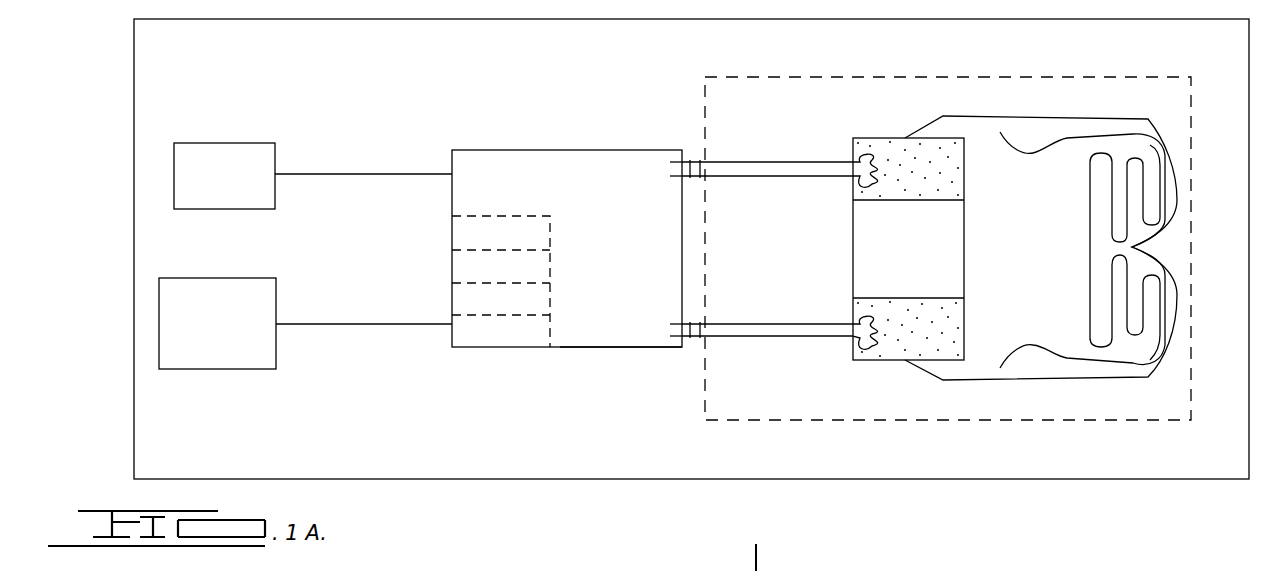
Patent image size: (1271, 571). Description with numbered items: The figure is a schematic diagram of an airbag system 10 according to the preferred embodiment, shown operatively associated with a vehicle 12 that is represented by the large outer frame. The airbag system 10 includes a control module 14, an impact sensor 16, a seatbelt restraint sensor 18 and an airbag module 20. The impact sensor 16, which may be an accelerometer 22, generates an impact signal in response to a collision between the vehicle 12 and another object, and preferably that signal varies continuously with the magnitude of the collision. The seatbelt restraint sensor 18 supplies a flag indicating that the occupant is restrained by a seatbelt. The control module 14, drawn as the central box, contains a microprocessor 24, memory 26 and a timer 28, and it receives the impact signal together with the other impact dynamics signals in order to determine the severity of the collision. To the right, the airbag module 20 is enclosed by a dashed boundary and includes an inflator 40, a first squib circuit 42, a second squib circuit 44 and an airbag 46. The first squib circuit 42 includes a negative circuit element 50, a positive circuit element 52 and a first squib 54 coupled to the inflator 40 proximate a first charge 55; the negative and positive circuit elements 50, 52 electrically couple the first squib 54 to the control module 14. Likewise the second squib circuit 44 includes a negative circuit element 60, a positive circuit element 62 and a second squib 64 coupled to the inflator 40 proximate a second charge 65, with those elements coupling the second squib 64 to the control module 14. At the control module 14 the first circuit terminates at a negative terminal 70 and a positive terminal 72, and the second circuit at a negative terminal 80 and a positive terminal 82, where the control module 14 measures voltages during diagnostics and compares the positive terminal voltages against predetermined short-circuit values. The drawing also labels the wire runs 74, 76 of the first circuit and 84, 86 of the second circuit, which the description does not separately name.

The airbag system 10 is at (518, 83).
The vehicle 12 is at (134, 72).
The control module 14 is at (540, 162).
The impact sensor 16 is at (207, 145).
The seatbelt restraint sensor 18 is at (250, 360).
The airbag module 20 is at (1032, 422).
The accelerometer 22 is at (268, 155).
The microprocessor 24 is at (455, 195).
The memory 26 is at (555, 322).
The timer 28 is at (629, 333).
The inflator 40 is at (948, 252).
The first squib circuit 42 is at (767, 165).
The second squib circuit 44 is at (767, 328).
The airbag 46 is at (1165, 293).
The negative circuit element 50 is at (697, 180).
The positive circuit element 52 is at (697, 185).
The first squib 54 is at (878, 155).
The first charge 55 is at (958, 173).
The negative circuit element 60 is at (697, 323).
The positive circuit element 62 is at (697, 338).
The second squib 64 is at (878, 318).
The second charge 65 is at (958, 335).
The negative terminal 70 is at (680, 162).
The positive terminal 72 is at (680, 176).
The first initiator return wire 74 is at (793, 180).
The first initiator supply wire 76 is at (752, 160).
The negative terminal 80 is at (680, 320).
The positive terminal 82 is at (680, 333).
The second initiator return wire 84 is at (755, 338).
The second initiator supply wire 86 is at (750, 321).